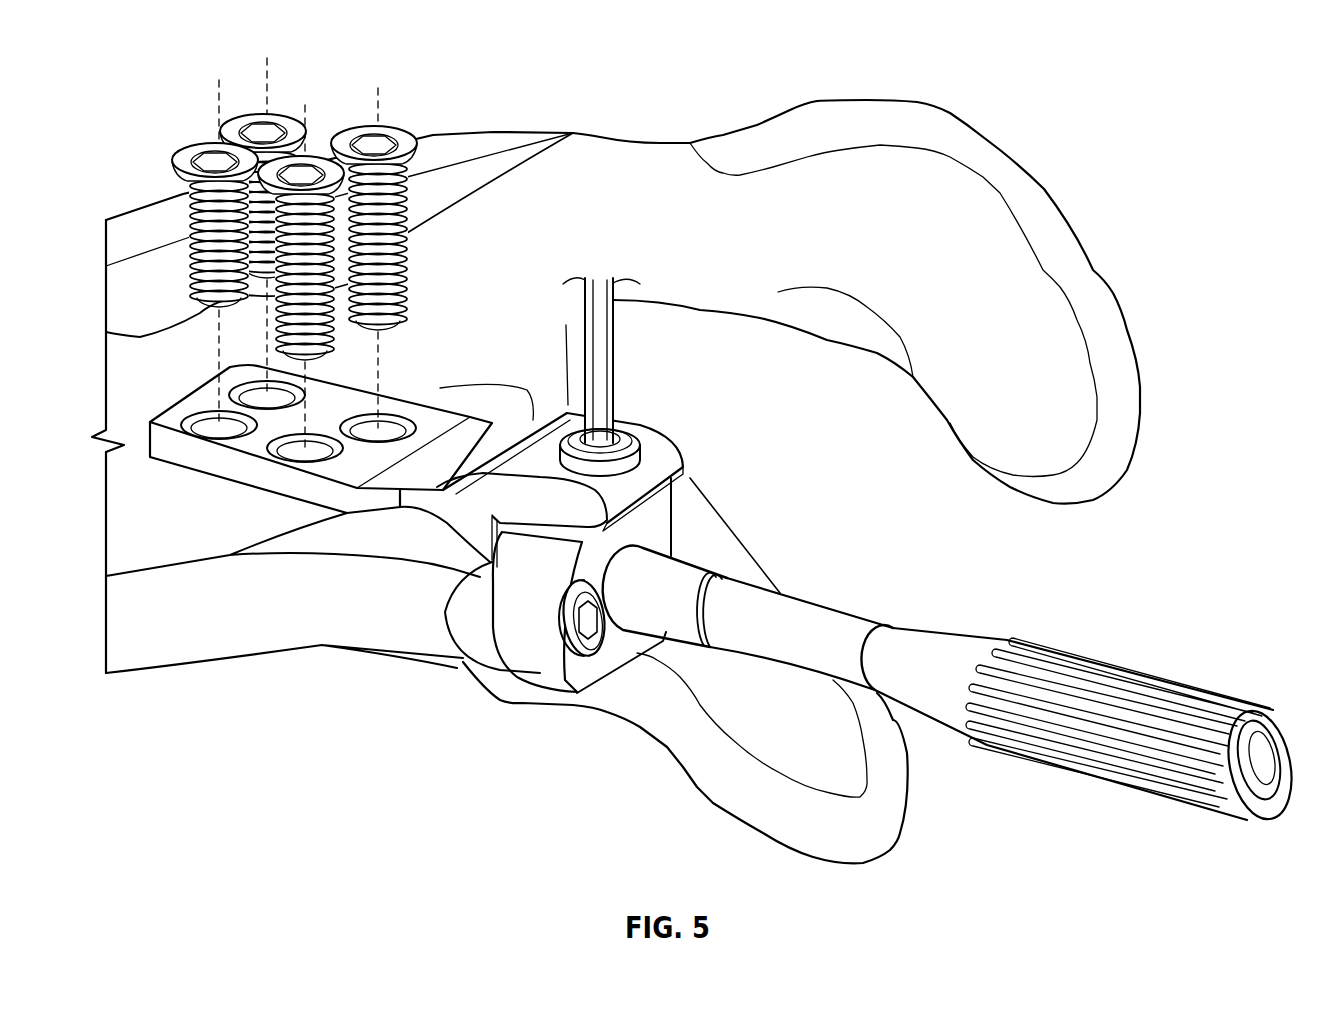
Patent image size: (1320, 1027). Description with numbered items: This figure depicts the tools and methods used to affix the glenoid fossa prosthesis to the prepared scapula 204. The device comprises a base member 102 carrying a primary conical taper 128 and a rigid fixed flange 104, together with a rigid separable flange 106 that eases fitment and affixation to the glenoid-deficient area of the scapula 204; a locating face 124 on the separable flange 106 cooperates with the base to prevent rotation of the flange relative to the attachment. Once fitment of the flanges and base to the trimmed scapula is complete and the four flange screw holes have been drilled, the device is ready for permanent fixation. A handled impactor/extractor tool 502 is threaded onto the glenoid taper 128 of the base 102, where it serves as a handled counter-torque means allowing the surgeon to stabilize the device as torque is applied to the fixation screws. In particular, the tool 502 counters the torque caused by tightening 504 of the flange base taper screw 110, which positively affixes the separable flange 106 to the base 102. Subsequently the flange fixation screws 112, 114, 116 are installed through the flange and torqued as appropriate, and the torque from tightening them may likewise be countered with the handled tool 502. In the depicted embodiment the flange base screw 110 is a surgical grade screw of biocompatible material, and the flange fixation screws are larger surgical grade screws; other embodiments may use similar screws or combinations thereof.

The base member 102 is at (540, 672).
The rigid fixed flange 104 is at (457, 668).
The rigid separable flange 106 is at (497, 503).
The flange base screw 110 is at (620, 437).
The flange fixation screw 112 is at (237, 398).
The flange fixation screw 114 is at (313, 155).
The flange fixation screw 116 is at (180, 156).
The locating face 124 is at (585, 650).
The primary conical taper 128 is at (685, 585).
The scapula 204 is at (984, 255).
The handled impactor/extractor tool 502 is at (933, 643).
The tightening 504 is at (597, 343).